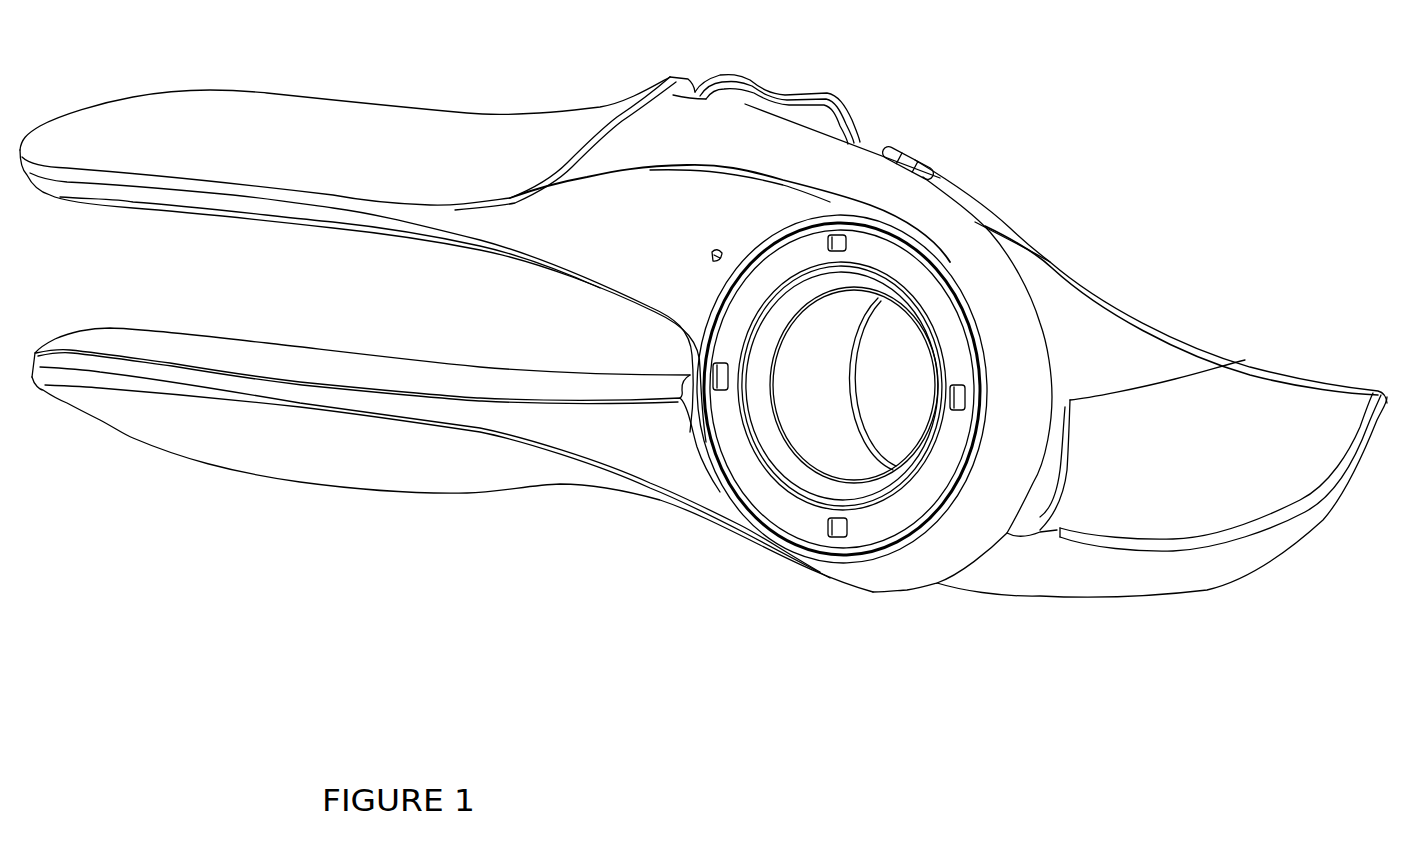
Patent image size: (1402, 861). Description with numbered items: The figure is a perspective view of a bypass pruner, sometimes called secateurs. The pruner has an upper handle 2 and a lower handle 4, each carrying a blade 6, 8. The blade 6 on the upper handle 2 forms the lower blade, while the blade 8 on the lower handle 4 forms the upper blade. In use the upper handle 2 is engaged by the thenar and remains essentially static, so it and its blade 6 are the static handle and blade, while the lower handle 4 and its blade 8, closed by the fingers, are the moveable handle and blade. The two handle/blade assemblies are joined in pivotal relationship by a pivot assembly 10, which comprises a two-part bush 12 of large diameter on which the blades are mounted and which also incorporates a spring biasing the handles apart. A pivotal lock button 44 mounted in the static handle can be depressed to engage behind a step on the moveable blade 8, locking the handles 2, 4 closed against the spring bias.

The upper handle 2 is at (428, 123).
The lower handle 4 is at (354, 466).
The blade 6 is at (1144, 580).
The blade 8 is at (1238, 389).
The pivot assembly 10 is at (712, 250).
The two-part bush 12 is at (821, 452).
The pivotal lock button 44 is at (812, 98).